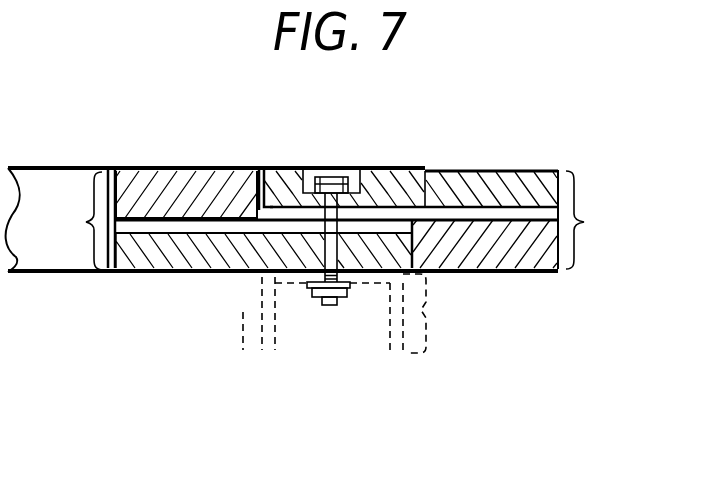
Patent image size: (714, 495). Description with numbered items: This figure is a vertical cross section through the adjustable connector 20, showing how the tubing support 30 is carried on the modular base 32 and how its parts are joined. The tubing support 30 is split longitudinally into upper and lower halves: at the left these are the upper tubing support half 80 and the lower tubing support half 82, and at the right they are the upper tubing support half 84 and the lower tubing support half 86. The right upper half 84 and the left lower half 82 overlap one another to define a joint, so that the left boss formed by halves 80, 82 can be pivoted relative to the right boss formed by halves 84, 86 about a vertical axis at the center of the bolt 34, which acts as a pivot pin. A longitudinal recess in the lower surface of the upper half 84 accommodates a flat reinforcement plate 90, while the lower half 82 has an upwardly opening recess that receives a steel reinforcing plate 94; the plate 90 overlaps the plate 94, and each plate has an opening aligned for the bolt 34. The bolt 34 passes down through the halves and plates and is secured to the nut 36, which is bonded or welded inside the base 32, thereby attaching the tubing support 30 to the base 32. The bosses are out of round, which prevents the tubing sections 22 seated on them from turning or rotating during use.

The adjustable connector 20 is at (268, 141).
The tubing sections 22 is at (67, 165).
The tubing support 30 is at (317, 220).
The modular base 32 is at (355, 313).
The bolt 34 is at (330, 245).
The nut 36 is at (340, 302).
The upper tubing support half (left boss) 80 is at (160, 182).
The lower tubing support half (left boss) 82 is at (138, 257).
The upper tubing support half (right boss) 84 is at (500, 178).
The lower tubing support half (right boss) 86 is at (480, 250).
The flat reinforcement plate 90 is at (455, 212).
The steel reinforcing plate 94 is at (190, 224).